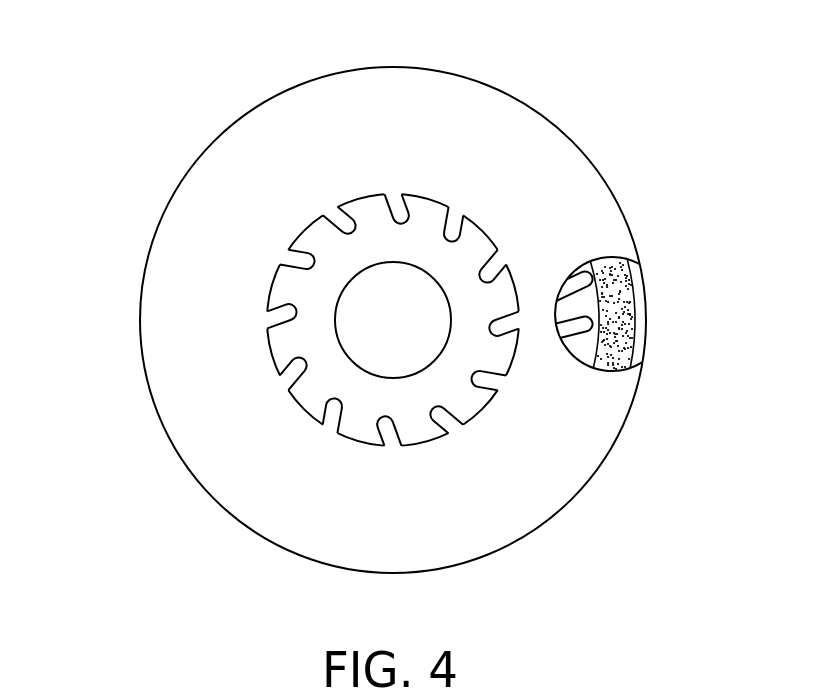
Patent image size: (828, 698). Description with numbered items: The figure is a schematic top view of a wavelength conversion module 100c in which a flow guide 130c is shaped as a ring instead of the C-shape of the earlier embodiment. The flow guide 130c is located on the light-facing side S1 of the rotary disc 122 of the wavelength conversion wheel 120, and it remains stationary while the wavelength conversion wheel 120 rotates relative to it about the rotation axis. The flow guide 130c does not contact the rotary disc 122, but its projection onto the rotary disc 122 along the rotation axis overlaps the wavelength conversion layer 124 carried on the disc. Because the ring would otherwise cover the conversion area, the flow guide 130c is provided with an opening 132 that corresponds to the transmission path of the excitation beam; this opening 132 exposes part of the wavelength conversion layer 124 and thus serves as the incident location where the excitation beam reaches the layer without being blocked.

The wavelength conversion module 100c is at (660, 607).
The flow guide 130c is at (158, 333).
The light-facing side S1 is at (423, 240).
The wavelength conversion wheel 120 is at (668, 314).
The rotary disc 122 is at (643, 315).
The wavelength conversion layer 124 is at (622, 347).
The opening 132 is at (603, 262).